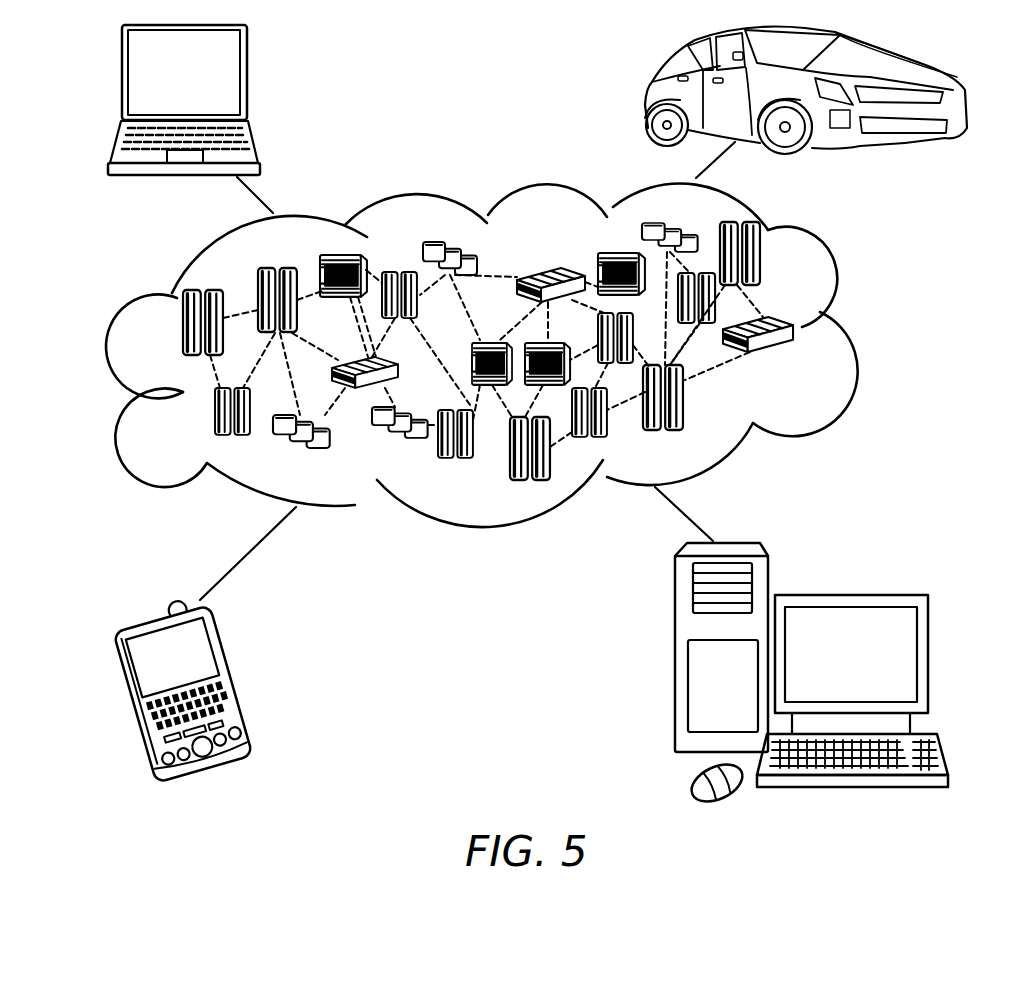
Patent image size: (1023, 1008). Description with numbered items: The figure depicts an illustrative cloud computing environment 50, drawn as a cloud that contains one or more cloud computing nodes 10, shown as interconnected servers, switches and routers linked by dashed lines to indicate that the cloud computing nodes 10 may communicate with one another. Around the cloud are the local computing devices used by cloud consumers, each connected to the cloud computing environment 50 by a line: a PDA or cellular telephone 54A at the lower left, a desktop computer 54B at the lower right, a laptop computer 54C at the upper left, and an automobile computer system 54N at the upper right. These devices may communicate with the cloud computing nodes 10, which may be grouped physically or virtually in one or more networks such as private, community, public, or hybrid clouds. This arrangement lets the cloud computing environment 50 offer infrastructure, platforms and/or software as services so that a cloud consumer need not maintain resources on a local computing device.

The cloud computing node 10 is at (812, 363).
The cloud computing environment 50 is at (506, 391).
The PDA or cellular telephone 54A is at (240, 683).
The desktop computer 54B is at (850, 594).
The laptop computer 54C is at (249, 80).
The automobile computer system 54N is at (651, 93).